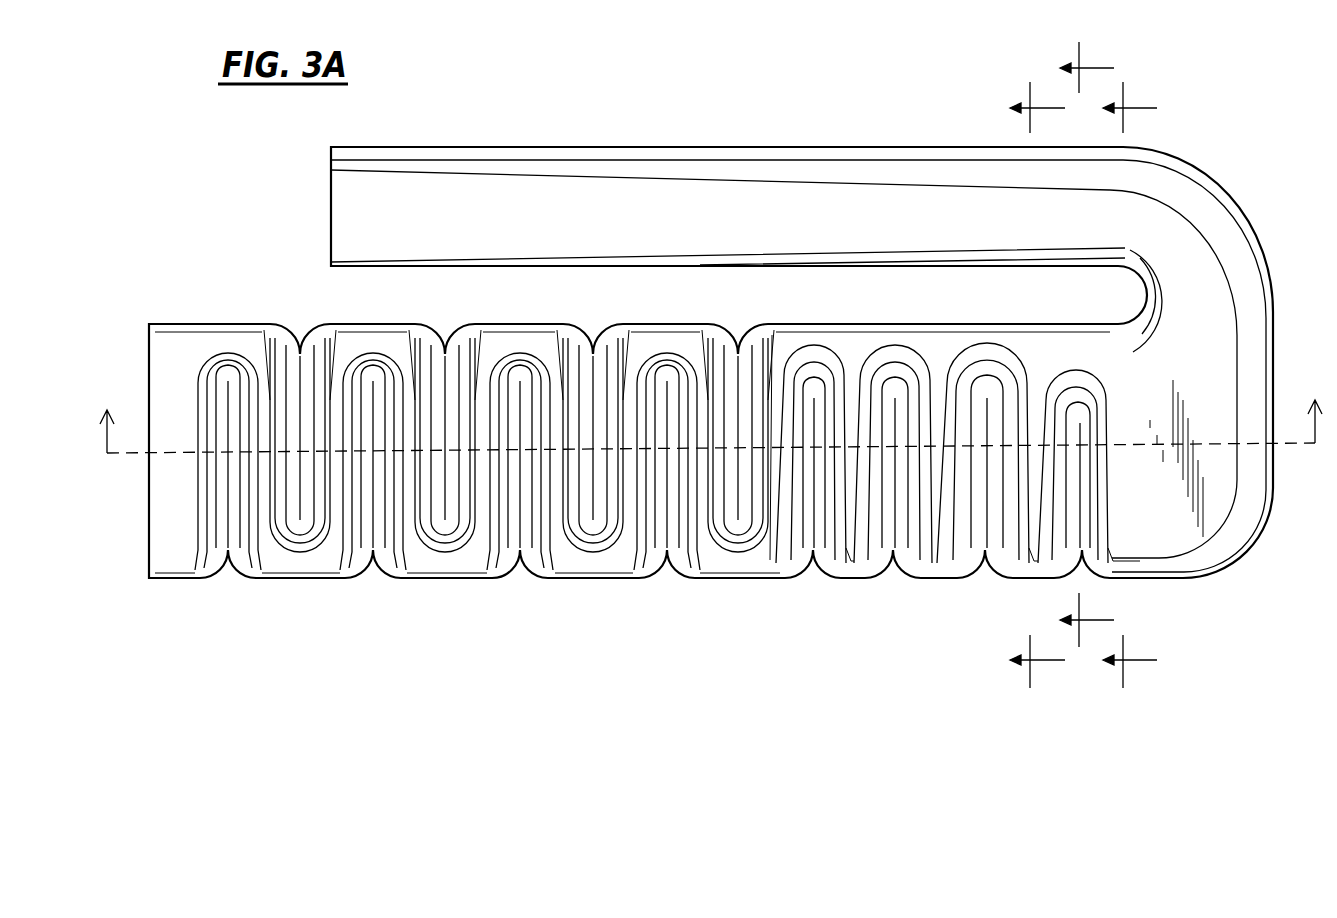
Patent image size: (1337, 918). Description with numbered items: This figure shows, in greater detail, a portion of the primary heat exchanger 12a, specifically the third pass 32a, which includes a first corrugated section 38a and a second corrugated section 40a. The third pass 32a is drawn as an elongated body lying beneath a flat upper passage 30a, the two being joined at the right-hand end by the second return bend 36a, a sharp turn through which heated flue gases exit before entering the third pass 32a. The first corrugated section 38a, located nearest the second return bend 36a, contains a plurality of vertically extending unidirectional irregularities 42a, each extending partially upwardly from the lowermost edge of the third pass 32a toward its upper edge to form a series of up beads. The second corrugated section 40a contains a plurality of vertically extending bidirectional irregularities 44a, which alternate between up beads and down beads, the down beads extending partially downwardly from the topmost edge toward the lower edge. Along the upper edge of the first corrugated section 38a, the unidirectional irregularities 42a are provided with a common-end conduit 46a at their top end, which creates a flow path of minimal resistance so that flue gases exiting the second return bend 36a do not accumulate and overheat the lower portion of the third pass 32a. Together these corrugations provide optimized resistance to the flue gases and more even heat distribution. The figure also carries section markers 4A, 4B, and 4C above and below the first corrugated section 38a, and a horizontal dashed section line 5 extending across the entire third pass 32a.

The primary heat exchanger 12a is at (597, 127).
The flat sheet portion 30a is at (742, 206).
The third pass 32a is at (172, 505).
The second return bend 36a is at (1247, 290).
The first corrugated section 38a is at (1073, 705).
The second corrugated section 40a is at (813, 705).
The unidirectional irregularities 42a is at (985, 512).
The bidirectional irregularities 44a is at (518, 436).
The common-end conduit 46a is at (936, 345).
The section line 4A is at (1130, 385).
The section line 4B is at (1087, 344).
The section line 4C is at (1037, 385).
The section line 5 is at (709, 411).